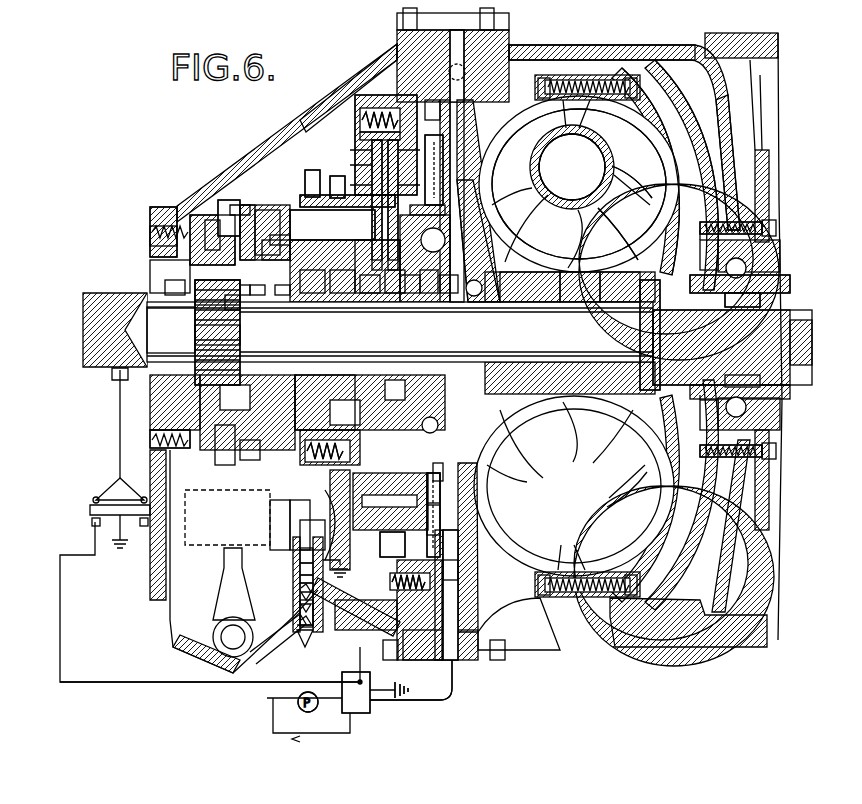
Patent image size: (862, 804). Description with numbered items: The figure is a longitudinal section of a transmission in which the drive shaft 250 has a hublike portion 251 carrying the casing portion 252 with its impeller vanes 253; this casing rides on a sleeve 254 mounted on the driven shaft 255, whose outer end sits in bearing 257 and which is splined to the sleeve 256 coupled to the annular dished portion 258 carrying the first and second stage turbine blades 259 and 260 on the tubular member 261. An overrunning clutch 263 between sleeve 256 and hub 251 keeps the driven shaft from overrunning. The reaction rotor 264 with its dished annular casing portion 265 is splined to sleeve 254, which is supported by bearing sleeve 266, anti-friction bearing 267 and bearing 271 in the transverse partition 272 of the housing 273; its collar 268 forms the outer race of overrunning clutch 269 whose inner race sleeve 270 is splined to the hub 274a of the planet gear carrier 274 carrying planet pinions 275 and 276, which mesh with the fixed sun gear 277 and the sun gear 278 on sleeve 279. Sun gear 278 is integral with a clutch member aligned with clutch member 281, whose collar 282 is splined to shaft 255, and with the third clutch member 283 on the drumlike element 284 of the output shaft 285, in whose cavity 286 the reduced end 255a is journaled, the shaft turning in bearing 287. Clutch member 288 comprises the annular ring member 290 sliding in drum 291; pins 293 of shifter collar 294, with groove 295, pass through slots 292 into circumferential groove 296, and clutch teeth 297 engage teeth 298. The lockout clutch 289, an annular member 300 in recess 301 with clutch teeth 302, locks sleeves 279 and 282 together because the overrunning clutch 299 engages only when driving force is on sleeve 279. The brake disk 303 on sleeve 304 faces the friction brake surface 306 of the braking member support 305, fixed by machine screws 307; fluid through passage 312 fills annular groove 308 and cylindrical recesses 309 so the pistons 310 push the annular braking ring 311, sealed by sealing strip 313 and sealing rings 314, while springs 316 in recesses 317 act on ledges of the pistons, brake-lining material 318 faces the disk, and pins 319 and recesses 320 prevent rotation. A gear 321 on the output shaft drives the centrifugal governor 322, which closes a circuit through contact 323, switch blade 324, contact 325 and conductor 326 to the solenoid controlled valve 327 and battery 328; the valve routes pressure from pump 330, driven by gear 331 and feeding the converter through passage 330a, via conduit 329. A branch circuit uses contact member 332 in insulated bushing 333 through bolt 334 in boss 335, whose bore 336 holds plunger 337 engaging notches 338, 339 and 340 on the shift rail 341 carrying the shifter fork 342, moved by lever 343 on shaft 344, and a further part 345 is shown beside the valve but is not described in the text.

The drive shaft 250 is at (812, 333).
The hublike portion 251 is at (760, 285).
The casing portion 252 is at (690, 195).
The impeller vanes 253 is at (545, 127).
The sleeve 254 is at (568, 302).
The driven shaft 255 is at (600, 335).
The reduced end portion 255a is at (217, 335).
The sleeve 256 is at (640, 310).
The bearing 257 is at (760, 300).
The annular dished portion 258 is at (667, 182).
The first stage turbine blades 259 is at (640, 135).
The second stage turbine blades 260 is at (570, 245).
The tubular member 261 is at (603, 158).
The overrunning clutch 263 is at (712, 222).
The reaction rotor 264 is at (648, 200).
The dished annular casing portion 265 is at (642, 250).
The bearing sleeve 266 is at (540, 302).
The anti-friction bearing 267 is at (478, 297).
The collar 268 is at (450, 290).
The overrunning clutch 269 is at (430, 290).
The inner race sleeve 270 is at (410, 290).
The anti-friction bearing 271 is at (433, 240).
The transverse partition 272 is at (466, 102).
The transmission housing 273 is at (578, 45).
The planet gear carrier 274 is at (300, 200).
The hub 274a is at (370, 290).
The planet pinion 275 is at (310, 180).
The planet pinion 276 is at (336, 185).
The sun gear 277 is at (372, 255).
The sun gear 278 is at (315, 285).
The sleeve 279 is at (300, 380).
The clutch member 281 is at (233, 304).
The reduced collar portion 282 is at (217, 332).
The third clutch member 283 is at (168, 280).
The drumlike element 284 is at (217, 293).
The output shaft 285 is at (152, 272).
The cavity 286 is at (140, 322).
The bearing 287 is at (155, 240).
The clutch member 288 is at (248, 225).
The lockout clutch 289 is at (283, 235).
The annular ring member 290 is at (205, 235).
The drum 291 is at (180, 440).
The slots 292 is at (265, 225).
The pins 293 is at (230, 215).
The shifter collar 294 is at (240, 210).
The groove 295 is at (248, 455).
The circumferential groove 296 is at (222, 430).
The clutch teeth 297 is at (212, 230).
The clutch teeth 298 is at (190, 218).
The overrunning clutch 299 is at (248, 290).
The annular member 300 is at (255, 285).
The recess 301 is at (275, 245).
The clutch teeth 302 is at (283, 285).
The brake disk 303 is at (375, 157).
The sleeve 304 is at (395, 290).
The braking member support 305 is at (395, 108).
The friction brake surface 306 is at (390, 175).
The machine screws 307 is at (388, 75).
The annular groove 308 is at (440, 492).
The cylindrical recesses 309 is at (445, 145).
The pistons 310 is at (440, 195).
The annular braking ring 311 is at (440, 500).
The passage 312 is at (460, 595).
The sealing strip 313 is at (440, 512).
The sealing rings 314 is at (460, 576).
The springs 316 is at (362, 120).
The recesses 317 is at (365, 137).
The brake-lining material 318 is at (348, 450).
The pins 319 is at (385, 557).
The recesses 320 is at (390, 582).
The gear 321 is at (118, 383).
The centrifugal governor 322 is at (118, 480).
The contact 323 is at (148, 522).
The governor controlled switch blade 324 is at (120, 531).
The contact 325 is at (92, 522).
The conductor 326 is at (288, 682).
The solenoid controlled valve 327 is at (356, 672).
The battery 328 is at (398, 682).
The conduit 329 is at (455, 690).
The pump 330 is at (308, 712).
The passage 330a is at (465, 72).
The gear 331 is at (760, 452).
The contact member 332 is at (313, 606).
The insulated bushing 333 is at (313, 628).
The bolt 334 is at (300, 592).
The boss 335 is at (300, 572).
The bore 336 is at (339, 573).
The plunger 337 is at (315, 530).
The notch 338 is at (300, 555).
The notch 339 is at (300, 520).
The notch 340 is at (338, 510).
The shift rail 341 is at (280, 520).
The shifter fork 342 is at (205, 488).
The lever 343 is at (226, 585).
The shaft 344 is at (221, 638).
The seat 345 is at (300, 580).